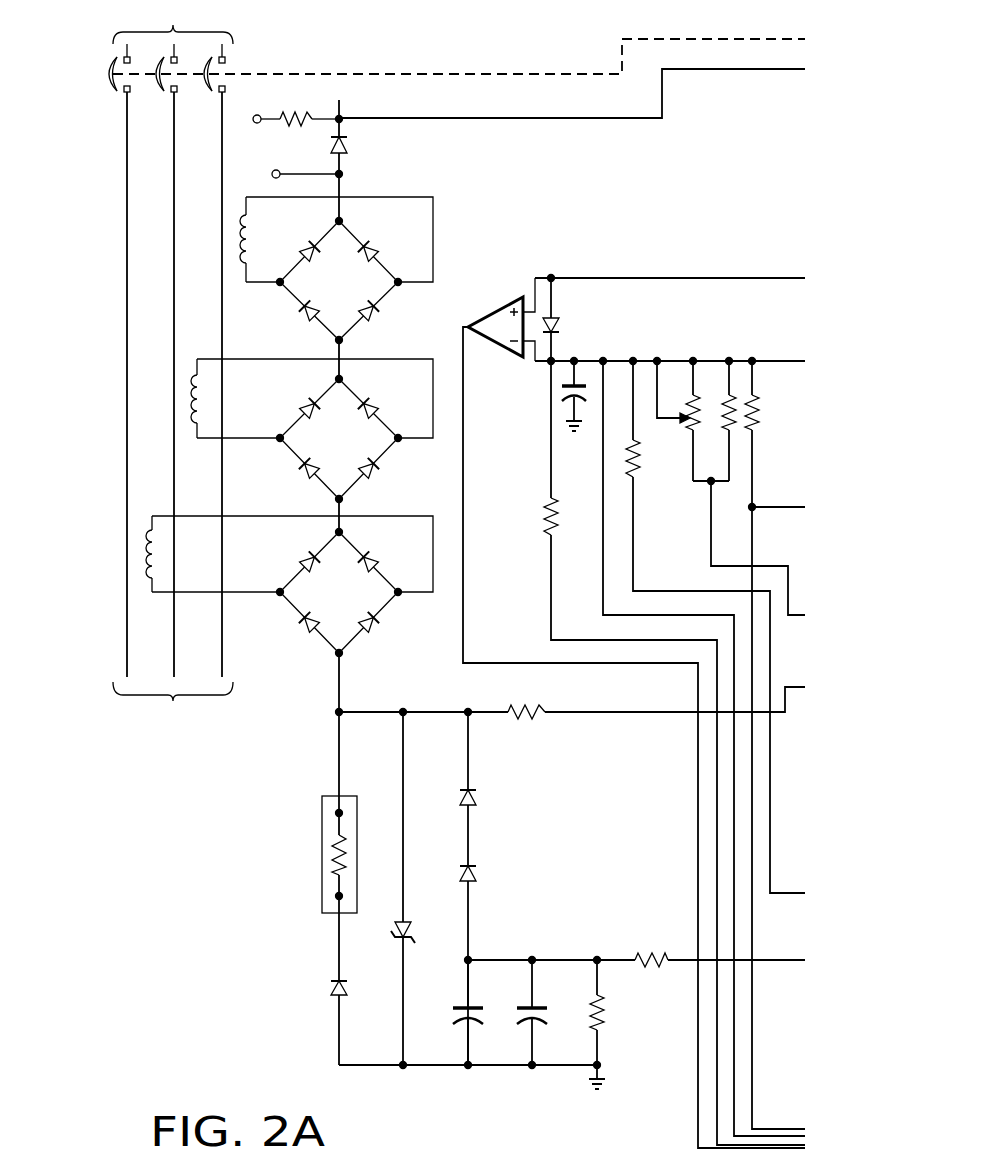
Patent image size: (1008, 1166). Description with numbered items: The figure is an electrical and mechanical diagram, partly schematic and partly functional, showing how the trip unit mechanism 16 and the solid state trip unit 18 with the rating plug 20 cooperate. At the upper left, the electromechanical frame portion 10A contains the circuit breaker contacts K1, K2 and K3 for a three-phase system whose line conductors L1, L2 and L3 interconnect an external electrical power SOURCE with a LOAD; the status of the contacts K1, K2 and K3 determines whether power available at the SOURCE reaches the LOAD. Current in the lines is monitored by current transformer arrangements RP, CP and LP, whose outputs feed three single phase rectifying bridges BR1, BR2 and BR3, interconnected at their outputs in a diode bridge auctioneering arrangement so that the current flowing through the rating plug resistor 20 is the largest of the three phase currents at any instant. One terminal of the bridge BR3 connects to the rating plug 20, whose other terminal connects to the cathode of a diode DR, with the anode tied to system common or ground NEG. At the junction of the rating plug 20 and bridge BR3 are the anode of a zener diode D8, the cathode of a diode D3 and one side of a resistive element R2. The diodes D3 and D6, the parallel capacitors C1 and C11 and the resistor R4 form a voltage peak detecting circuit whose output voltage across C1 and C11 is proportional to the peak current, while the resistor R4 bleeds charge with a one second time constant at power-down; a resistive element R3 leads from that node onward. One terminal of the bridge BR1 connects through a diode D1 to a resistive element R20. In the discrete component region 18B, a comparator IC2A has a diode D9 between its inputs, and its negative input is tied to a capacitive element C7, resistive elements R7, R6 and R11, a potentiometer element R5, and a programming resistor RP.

The circuit breaker contact K1 is at (117, 91).
The circuit breaker contact K2 is at (164, 91).
The circuit breaker contact K3 is at (212, 91).
The line conductor L1 is at (127, 303).
The line conductor L2 is at (174, 288).
The line conductor L3 is at (222, 303).
The load LOAD is at (173, 23).
The external electrical power source SOURCE is at (173, 707).
The resistive element R20 is at (284, 126).
The diode D1 is at (348, 147).
The current transformer / programming resistor RP is at (250, 245).
The electromechanical frame portion 10A is at (267, 330).
The single phase rectifying bridge BR1 is at (357, 291).
The single phase rectifying bridge BR2 is at (357, 452).
The single phase rectifying bridge BR3 is at (357, 599).
The current transformer arrangement CP is at (195, 432).
The current transformer arrangement LP is at (144, 516).
The integrated circuit comparator IC2A is at (493, 310).
The diode D9 is at (560, 324).
The capacitive element C7 is at (586, 403).
The resistive element R11 is at (637, 478).
The potentiometer element R5 is at (692, 432).
The resistive element R6 is at (725, 434).
The resistive element R7 is at (755, 432).
The solid state trip unit 18 is at (625, 701).
The resistive element R2 is at (535, 719).
The rating plug resistor 20 is at (322, 847).
The zener diode D8 is at (408, 927).
The diode D3 is at (478, 797).
The diode D6 is at (478, 874).
The discrete component region 18B is at (643, 833).
The resistive element R3 is at (635, 955).
The resistive element R4 is at (603, 1028).
The diode DR is at (330, 990).
The capacitive element C1 is at (447, 1016).
The capacitive element C11 is at (511, 1016).
The system common or ground NEG is at (602, 1082).
The trip unit mechanism 16 is at (463, 1153).